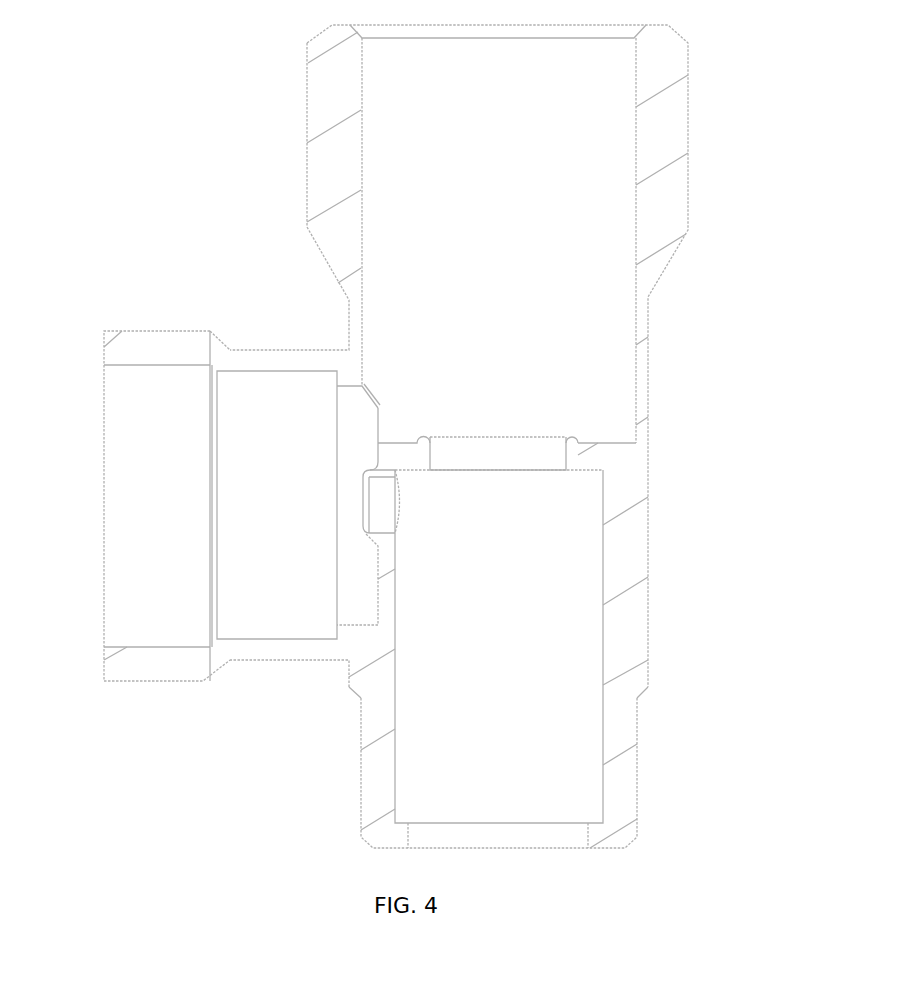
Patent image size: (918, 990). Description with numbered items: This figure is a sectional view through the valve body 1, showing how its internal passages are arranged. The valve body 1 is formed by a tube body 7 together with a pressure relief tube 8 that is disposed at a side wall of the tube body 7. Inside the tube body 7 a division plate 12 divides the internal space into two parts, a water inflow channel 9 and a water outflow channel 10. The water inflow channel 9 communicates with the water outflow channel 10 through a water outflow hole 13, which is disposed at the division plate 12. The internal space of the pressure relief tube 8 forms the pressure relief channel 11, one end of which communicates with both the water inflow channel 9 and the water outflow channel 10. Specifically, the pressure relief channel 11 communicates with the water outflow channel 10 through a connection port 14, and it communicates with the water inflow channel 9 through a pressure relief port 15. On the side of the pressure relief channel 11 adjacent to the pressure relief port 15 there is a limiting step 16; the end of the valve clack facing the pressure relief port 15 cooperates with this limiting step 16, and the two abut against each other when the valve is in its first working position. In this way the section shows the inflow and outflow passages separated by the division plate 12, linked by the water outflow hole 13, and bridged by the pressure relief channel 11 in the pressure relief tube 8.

The valve body 1 is at (628, 544).
The tube body 7 is at (380, 793).
The pressure relief tube 8 is at (159, 668).
The water inflow channel 9 is at (487, 696).
The water outflow channel 10 is at (401, 195).
The pressure relief channel 11 is at (280, 510).
The division plate 12 is at (373, 413).
The water outflow hole 13 is at (463, 455).
The connection port 14 is at (408, 458).
The pressure relief port 15 is at (385, 510).
The limiting step 16 is at (337, 635).